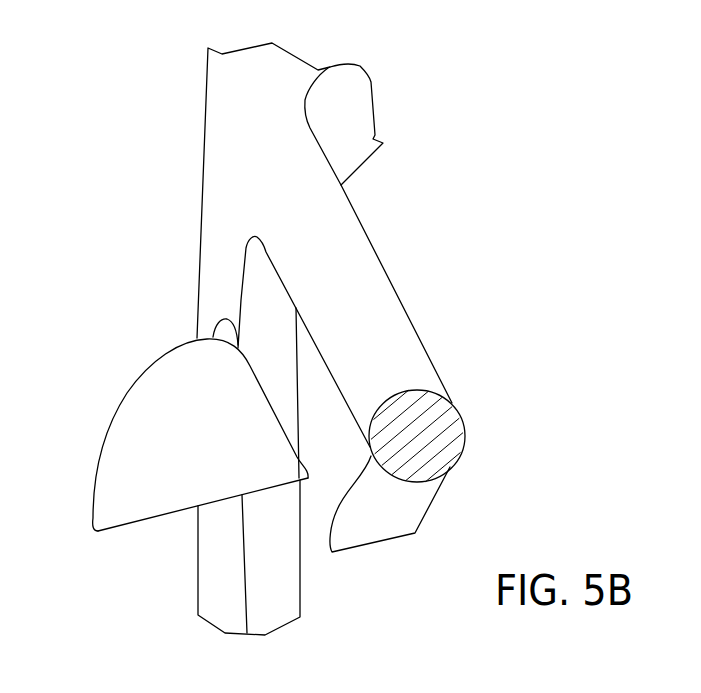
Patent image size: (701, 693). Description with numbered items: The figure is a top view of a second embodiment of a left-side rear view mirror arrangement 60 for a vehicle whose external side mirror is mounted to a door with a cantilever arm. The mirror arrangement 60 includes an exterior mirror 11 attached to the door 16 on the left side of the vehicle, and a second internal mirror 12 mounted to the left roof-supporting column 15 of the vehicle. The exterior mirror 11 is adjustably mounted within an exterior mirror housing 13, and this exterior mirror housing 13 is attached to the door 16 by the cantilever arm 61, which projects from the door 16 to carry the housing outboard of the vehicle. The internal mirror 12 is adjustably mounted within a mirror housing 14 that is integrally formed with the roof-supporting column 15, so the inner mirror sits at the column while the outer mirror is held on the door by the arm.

The rear view mirror arrangement 60 is at (128, 221).
The cantilever arm 61 is at (220, 335).
The roof-supporting column 15 is at (385, 310).
The exterior mirror housing 13 is at (130, 395).
The exterior mirror 11 is at (145, 522).
The door 16 is at (278, 598).
The mirror housing 14 is at (425, 495).
The internal mirror 12 is at (363, 548).